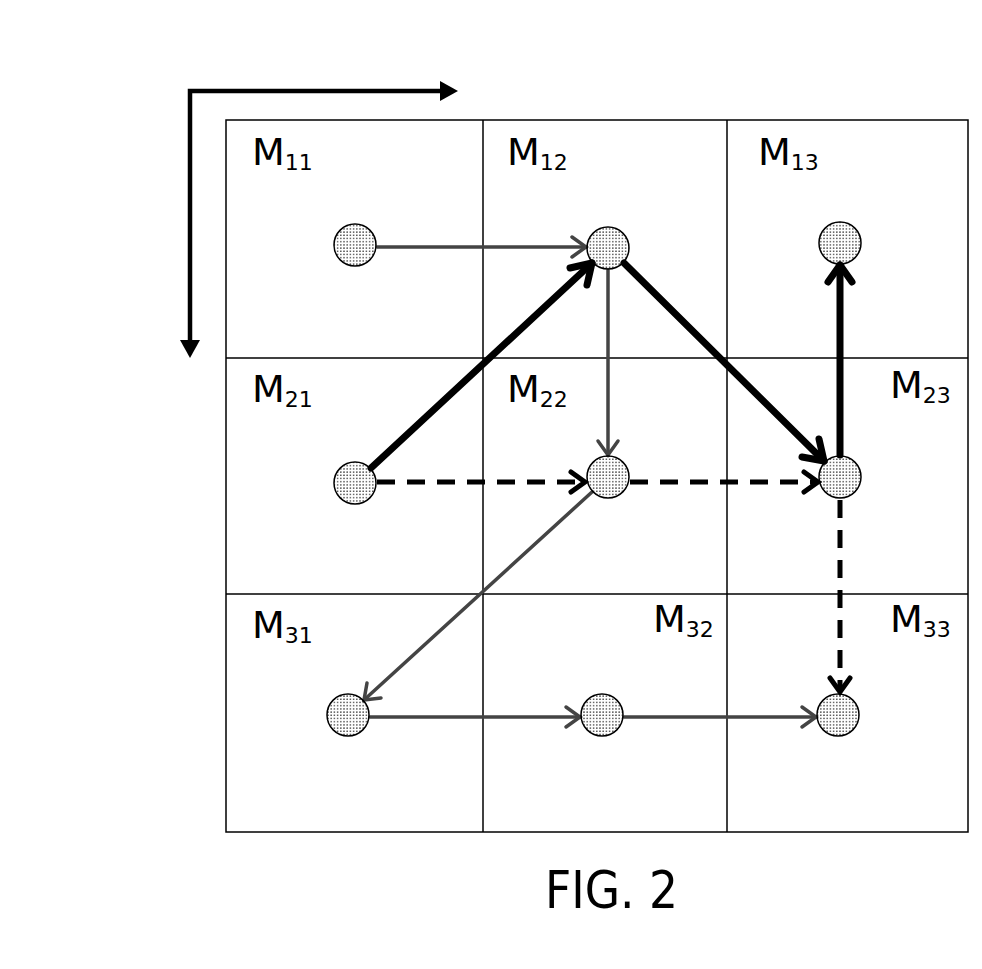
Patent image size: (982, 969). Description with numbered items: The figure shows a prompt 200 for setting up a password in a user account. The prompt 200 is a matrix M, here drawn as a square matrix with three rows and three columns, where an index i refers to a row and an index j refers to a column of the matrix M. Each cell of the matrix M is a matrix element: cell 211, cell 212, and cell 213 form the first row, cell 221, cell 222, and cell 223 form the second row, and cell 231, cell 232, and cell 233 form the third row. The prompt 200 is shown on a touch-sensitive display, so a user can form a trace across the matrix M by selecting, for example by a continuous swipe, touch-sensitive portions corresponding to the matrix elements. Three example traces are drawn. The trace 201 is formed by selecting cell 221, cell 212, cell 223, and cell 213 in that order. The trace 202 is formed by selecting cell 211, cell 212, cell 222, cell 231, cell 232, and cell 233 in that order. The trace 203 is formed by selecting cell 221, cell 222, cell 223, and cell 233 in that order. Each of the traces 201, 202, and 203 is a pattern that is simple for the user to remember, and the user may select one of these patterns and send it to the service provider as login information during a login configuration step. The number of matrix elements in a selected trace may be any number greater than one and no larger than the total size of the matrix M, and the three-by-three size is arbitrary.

The prompt 200 is at (178, 53).
The matrix M is at (862, 118).
The trace 201 is at (457, 380).
The trace 202 is at (445, 719).
The trace 203 is at (842, 567).
The cell 211 is at (373, 230).
The cell 212 is at (653, 201).
The cell 213 is at (863, 238).
The cell 221 is at (357, 507).
The cell 222 is at (617, 498).
The cell 223 is at (823, 498).
The cell 231 is at (327, 725).
The cell 232 is at (622, 729).
The cell 233 is at (862, 720).